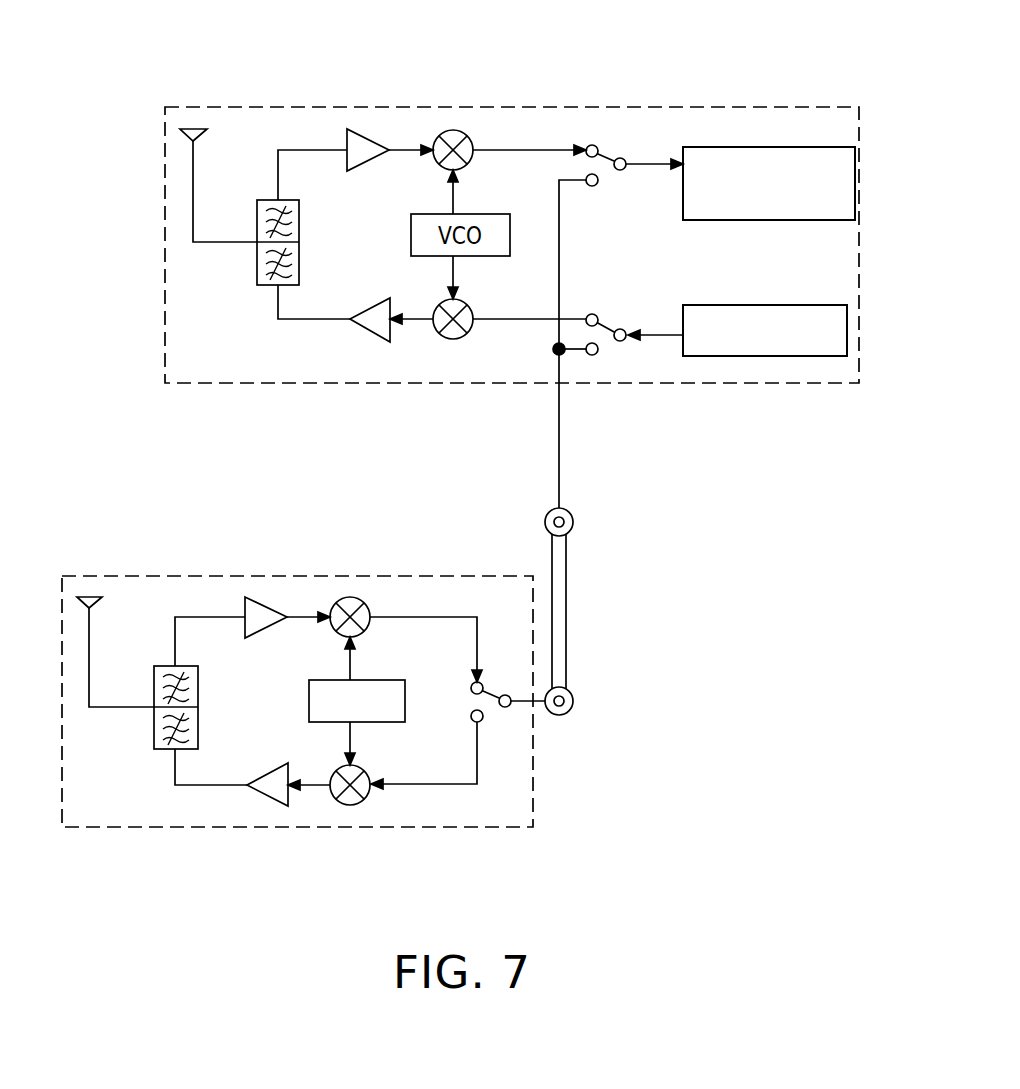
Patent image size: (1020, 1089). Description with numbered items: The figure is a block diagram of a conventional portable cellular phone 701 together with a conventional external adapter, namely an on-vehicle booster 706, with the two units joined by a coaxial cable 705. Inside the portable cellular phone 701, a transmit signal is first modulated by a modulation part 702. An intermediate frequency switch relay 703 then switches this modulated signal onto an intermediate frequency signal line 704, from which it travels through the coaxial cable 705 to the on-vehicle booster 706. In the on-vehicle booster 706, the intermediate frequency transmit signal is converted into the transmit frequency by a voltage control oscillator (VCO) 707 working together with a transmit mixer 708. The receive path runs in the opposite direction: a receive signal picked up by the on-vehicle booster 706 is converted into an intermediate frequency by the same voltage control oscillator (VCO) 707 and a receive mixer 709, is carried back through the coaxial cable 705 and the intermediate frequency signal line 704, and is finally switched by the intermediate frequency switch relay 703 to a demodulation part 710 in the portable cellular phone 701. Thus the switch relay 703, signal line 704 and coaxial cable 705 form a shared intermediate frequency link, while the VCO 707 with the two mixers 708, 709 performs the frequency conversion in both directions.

The portable cellular phone 701 is at (713, 108).
The modulation part 702 is at (804, 305).
The intermediate frequency switch relay 703 is at (607, 154).
The intermediate frequency signal line 704 is at (559, 466).
The coaxial cable 705 is at (568, 595).
The on-vehicle booster 706 is at (275, 576).
The voltage control oscillator (VCO) 707 is at (388, 680).
The transmit mixer 708 is at (362, 802).
The receive mixer 709 is at (356, 600).
The demodulation part 710 is at (812, 147).